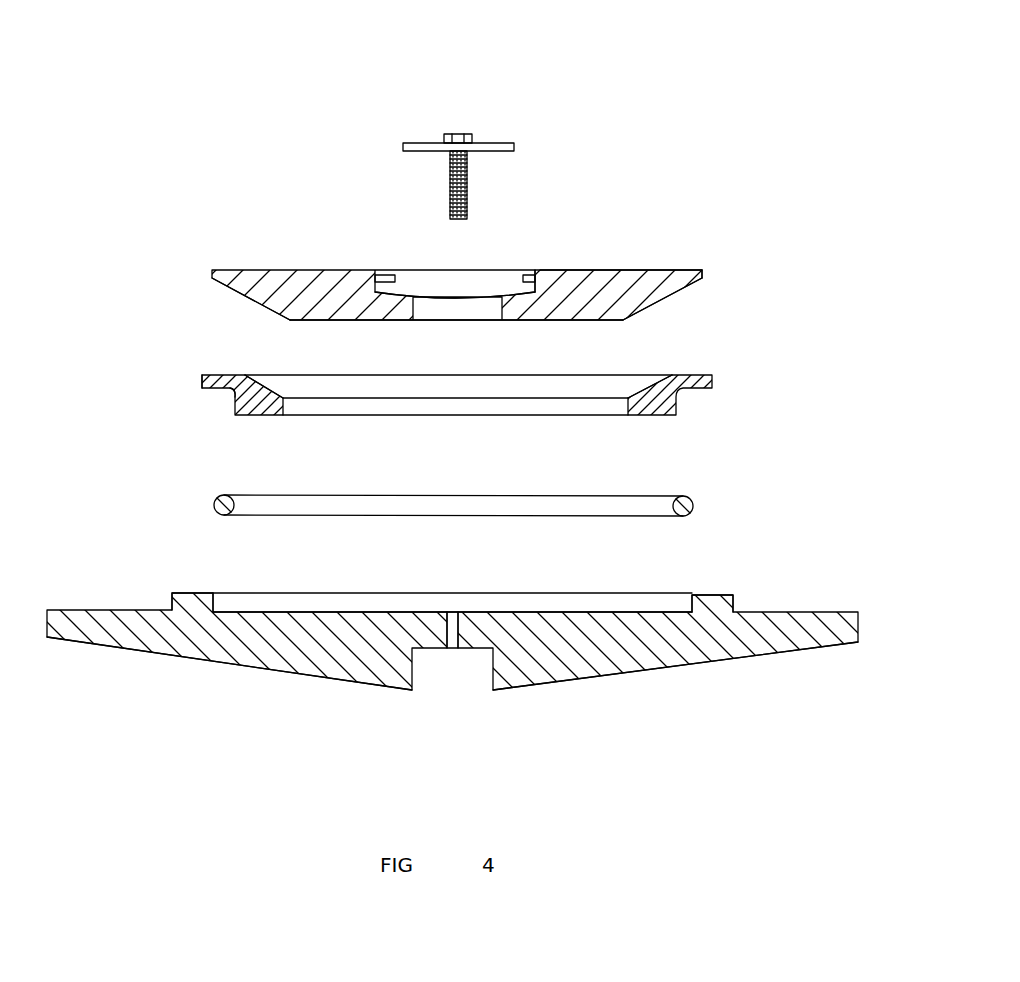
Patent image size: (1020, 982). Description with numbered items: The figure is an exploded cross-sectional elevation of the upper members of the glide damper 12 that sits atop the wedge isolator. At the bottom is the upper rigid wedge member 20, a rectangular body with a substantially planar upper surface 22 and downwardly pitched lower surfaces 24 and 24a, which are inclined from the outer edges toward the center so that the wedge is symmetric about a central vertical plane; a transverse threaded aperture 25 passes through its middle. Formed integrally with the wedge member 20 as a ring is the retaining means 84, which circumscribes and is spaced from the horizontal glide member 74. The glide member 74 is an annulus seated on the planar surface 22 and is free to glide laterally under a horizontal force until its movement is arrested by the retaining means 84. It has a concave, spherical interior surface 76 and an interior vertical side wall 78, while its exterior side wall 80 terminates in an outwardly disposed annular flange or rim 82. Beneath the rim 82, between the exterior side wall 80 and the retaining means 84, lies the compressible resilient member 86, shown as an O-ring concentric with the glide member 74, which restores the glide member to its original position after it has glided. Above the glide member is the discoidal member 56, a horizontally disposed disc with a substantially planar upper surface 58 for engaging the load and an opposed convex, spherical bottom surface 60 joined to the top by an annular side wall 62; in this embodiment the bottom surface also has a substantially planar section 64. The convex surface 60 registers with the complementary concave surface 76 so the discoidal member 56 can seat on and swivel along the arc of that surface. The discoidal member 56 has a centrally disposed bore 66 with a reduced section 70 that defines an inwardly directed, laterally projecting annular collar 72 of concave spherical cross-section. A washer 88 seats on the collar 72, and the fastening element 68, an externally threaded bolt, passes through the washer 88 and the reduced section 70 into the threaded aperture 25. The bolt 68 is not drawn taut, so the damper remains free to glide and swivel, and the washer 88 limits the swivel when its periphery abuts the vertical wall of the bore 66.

The bearing assembly 12 is at (198, 266).
The upper rigid wedge member 20 is at (472, 622).
The planar upper surface 22 is at (305, 612).
The inclined lower surface 24 is at (660, 667).
The inclined lower surface 24a is at (150, 655).
The transverse threaded aperture 25 is at (475, 602).
The discoidal member 56 is at (670, 285).
The planar upper surface 58 is at (445, 255).
The convex spherical bottom surface 60 is at (445, 272).
The annular side wall 62 is at (724, 218).
The substantially planar section 64 is at (456, 342).
The centrally disposed bore 66 is at (393, 280).
The fastening element 68 is at (452, 134).
The reduced section 70 is at (430, 297).
The annular collar 72 is at (545, 236).
The horizontal glide member 74 is at (712, 383).
The concave spherical interior surface 76 is at (435, 357).
The interior vertical side wall 78 is at (470, 435).
The exterior side wall 80 is at (235, 405).
The annular flange or rim 82 is at (200, 380).
The retaining means 84 is at (190, 593).
The compressible resilient member 86 is at (693, 500).
The washer 88 is at (498, 150).